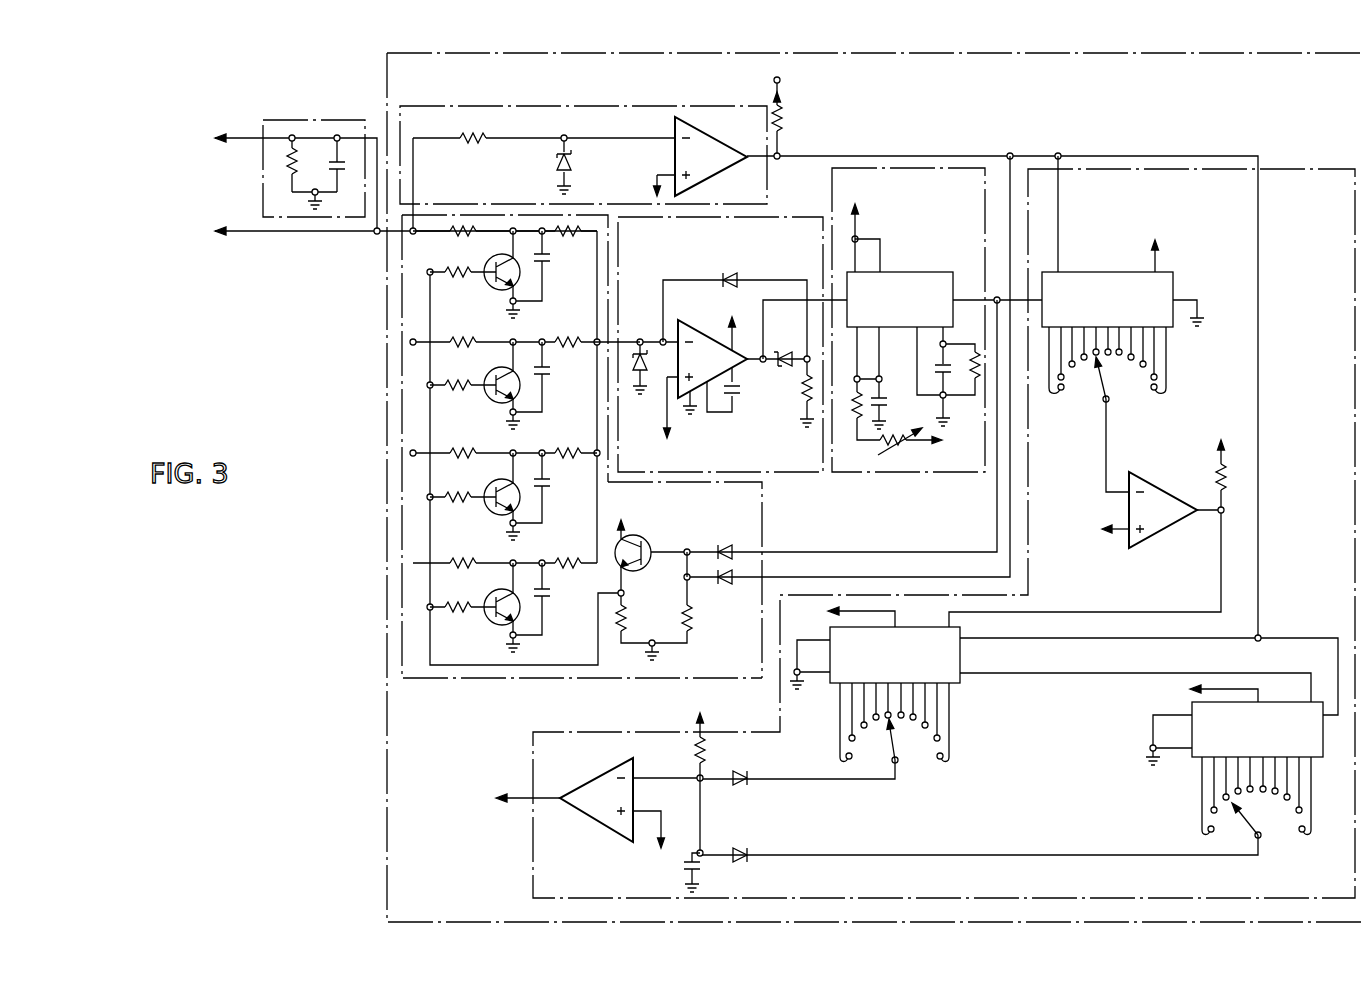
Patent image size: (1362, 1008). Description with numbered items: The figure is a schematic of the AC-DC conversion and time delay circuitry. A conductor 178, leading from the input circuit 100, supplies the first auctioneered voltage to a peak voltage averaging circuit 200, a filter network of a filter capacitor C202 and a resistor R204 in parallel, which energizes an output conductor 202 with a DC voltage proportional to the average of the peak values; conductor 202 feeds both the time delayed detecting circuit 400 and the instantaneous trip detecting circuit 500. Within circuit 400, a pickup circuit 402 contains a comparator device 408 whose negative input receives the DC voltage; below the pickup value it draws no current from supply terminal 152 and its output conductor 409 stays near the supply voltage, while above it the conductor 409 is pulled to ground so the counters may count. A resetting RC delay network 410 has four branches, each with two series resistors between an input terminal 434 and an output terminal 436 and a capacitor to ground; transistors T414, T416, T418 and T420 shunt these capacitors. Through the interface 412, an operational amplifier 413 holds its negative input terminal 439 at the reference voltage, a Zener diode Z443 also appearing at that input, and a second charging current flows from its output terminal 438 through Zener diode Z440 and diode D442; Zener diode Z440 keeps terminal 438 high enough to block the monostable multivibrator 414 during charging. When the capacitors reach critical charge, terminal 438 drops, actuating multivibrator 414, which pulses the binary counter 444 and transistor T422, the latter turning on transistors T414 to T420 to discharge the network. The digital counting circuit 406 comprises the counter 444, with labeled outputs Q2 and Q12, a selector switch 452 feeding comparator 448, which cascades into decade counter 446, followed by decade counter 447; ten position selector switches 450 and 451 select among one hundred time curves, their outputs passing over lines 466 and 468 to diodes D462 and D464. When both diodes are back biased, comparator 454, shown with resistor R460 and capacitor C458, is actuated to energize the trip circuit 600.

The time delayed detecting circuit 400 is at (387, 633).
The digital counting circuit 406 is at (1290, 170).
The peak voltage averaging circuit 200 is at (314, 118).
The conductor 178 is at (255, 139).
The input circuit 100 is at (162, 142).
The resistor R204 is at (288, 172).
The filter capacitor C202 is at (327, 166).
The output conductor 202 is at (266, 235).
The instantaneous trip detecting circuit 500 is at (121, 221).
The pickup circuit 402 is at (483, 107).
The comparator device 408 is at (729, 176).
The supply terminal 152 is at (784, 85).
The output conductor 409 is at (897, 156).
The monostable multivibrator circuit 414 is at (832, 170).
The interface 412 is at (781, 217).
The operational amplifier 413 is at (701, 329).
The zener diode Z443 is at (655, 355).
The negative input terminal 439 is at (665, 349).
The diode D442 is at (733, 274).
The output terminal 438 is at (765, 355).
The Zener diode Z440 is at (785, 368).
The input terminal 434 is at (414, 233).
The transistor T414 is at (498, 258).
The output terminal 436 is at (595, 338).
The transistor T416 is at (498, 371).
The transistor T418 is at (498, 483).
The transistor T420 is at (498, 593).
The resetting RC delay network 410 is at (763, 483).
The transistor T422 is at (645, 540).
The binary counter 444 is at (1123, 300).
The output terminal Q2 is at (1047, 396).
The output terminal Q12 is at (1177, 395).
The selector switch 452 is at (1119, 424).
The comparator means 448 is at (1145, 474).
The decade counter 446 is at (1064, 679).
The ten position selector switch 450 is at (876, 743).
The fine output line 466 is at (846, 783).
The decade counter 447 is at (1244, 758).
The ten position selector switch 451 is at (1239, 822).
The coarse output line 468 is at (857, 851).
The comparator 454 is at (594, 782).
The trip circuit 600 is at (447, 797).
The resistor R460 is at (697, 748).
The diode D462 is at (742, 768).
The diode D464 is at (750, 849).
The capacitor C458 is at (707, 869).